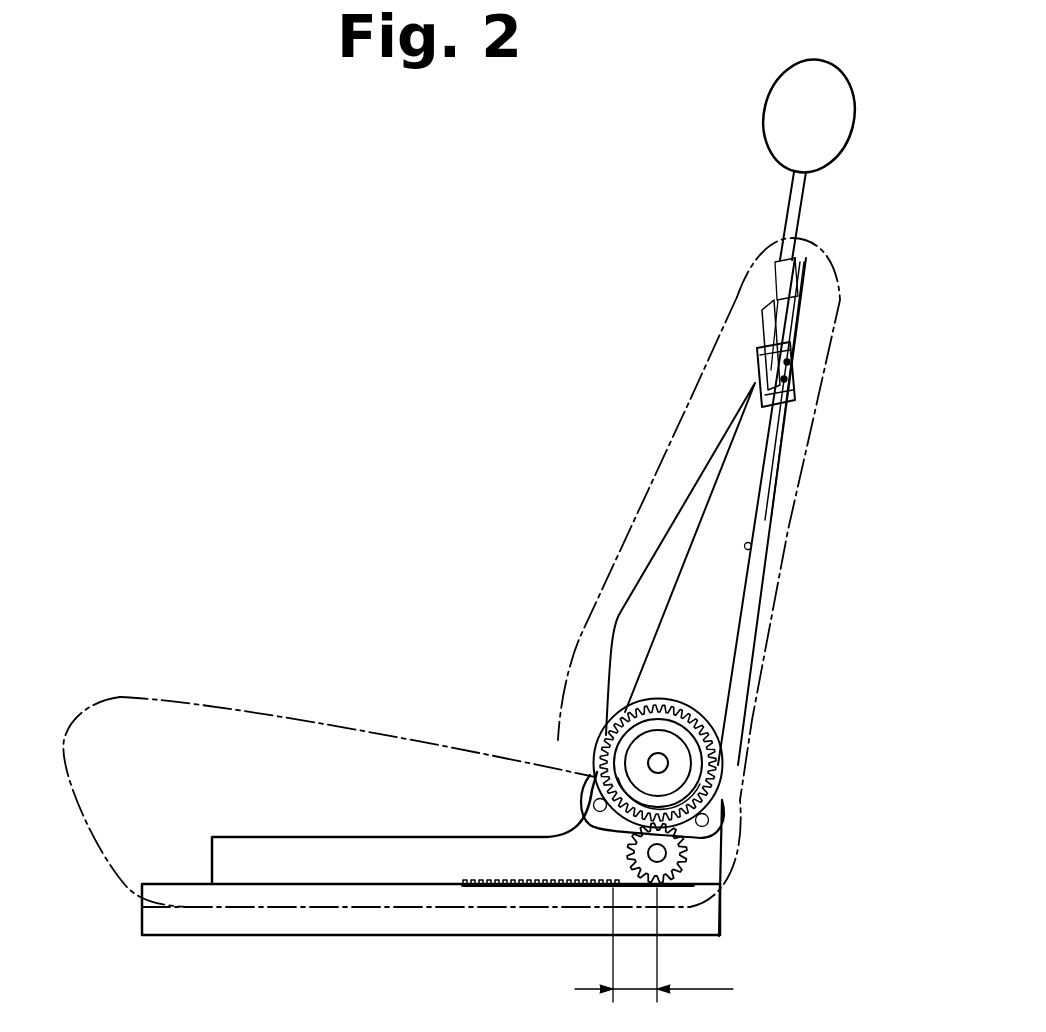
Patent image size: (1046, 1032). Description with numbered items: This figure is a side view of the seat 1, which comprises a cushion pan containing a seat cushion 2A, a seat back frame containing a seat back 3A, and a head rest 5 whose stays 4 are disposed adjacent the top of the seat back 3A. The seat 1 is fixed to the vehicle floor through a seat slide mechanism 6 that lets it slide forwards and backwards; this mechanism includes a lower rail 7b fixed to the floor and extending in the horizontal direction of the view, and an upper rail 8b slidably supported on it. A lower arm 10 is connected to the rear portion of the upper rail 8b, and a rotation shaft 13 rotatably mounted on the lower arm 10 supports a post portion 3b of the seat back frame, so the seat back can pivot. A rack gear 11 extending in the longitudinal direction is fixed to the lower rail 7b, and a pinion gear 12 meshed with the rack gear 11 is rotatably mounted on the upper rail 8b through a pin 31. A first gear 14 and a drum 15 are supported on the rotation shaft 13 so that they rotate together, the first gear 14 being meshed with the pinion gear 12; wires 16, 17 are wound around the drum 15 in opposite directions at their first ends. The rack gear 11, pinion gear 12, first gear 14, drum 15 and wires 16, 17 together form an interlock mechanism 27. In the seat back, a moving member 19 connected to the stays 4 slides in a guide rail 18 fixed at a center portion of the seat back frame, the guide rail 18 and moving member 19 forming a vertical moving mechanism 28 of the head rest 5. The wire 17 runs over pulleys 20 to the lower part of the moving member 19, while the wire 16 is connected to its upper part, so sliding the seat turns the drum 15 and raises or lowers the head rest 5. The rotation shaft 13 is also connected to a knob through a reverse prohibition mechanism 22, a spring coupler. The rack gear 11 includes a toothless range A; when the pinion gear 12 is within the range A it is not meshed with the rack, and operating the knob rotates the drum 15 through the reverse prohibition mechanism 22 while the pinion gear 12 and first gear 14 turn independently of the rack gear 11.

The seat 1 is at (850, 295).
The seat cushion 2A is at (222, 712).
The seat back 3A is at (725, 320).
The post portion 3b is at (697, 492).
The stay 4 is at (807, 205).
The head rest 5 is at (843, 128).
The seat slide mechanism 6 is at (196, 833).
The lower rail 7b is at (176, 895).
The upper rail 8b is at (270, 845).
The lower arm 10 is at (706, 805).
The rack gear 11 is at (470, 878).
The pinion gear 12 is at (675, 850).
The rotation shaft 13 is at (648, 766).
The first gear 14 is at (702, 772).
The drum 15 is at (708, 725).
The wire 16 is at (683, 552).
The wire 17 is at (745, 600).
The guide rail 18 is at (784, 457).
The moving member 19 is at (792, 368).
The pulley 20 is at (752, 546).
The reverse prohibition mechanism 22 is at (642, 746).
The interlock mechanism 27 is at (495, 685).
The vertical moving mechanism 28 is at (752, 368).
The pin 31 is at (665, 857).
The range A is at (654, 945).